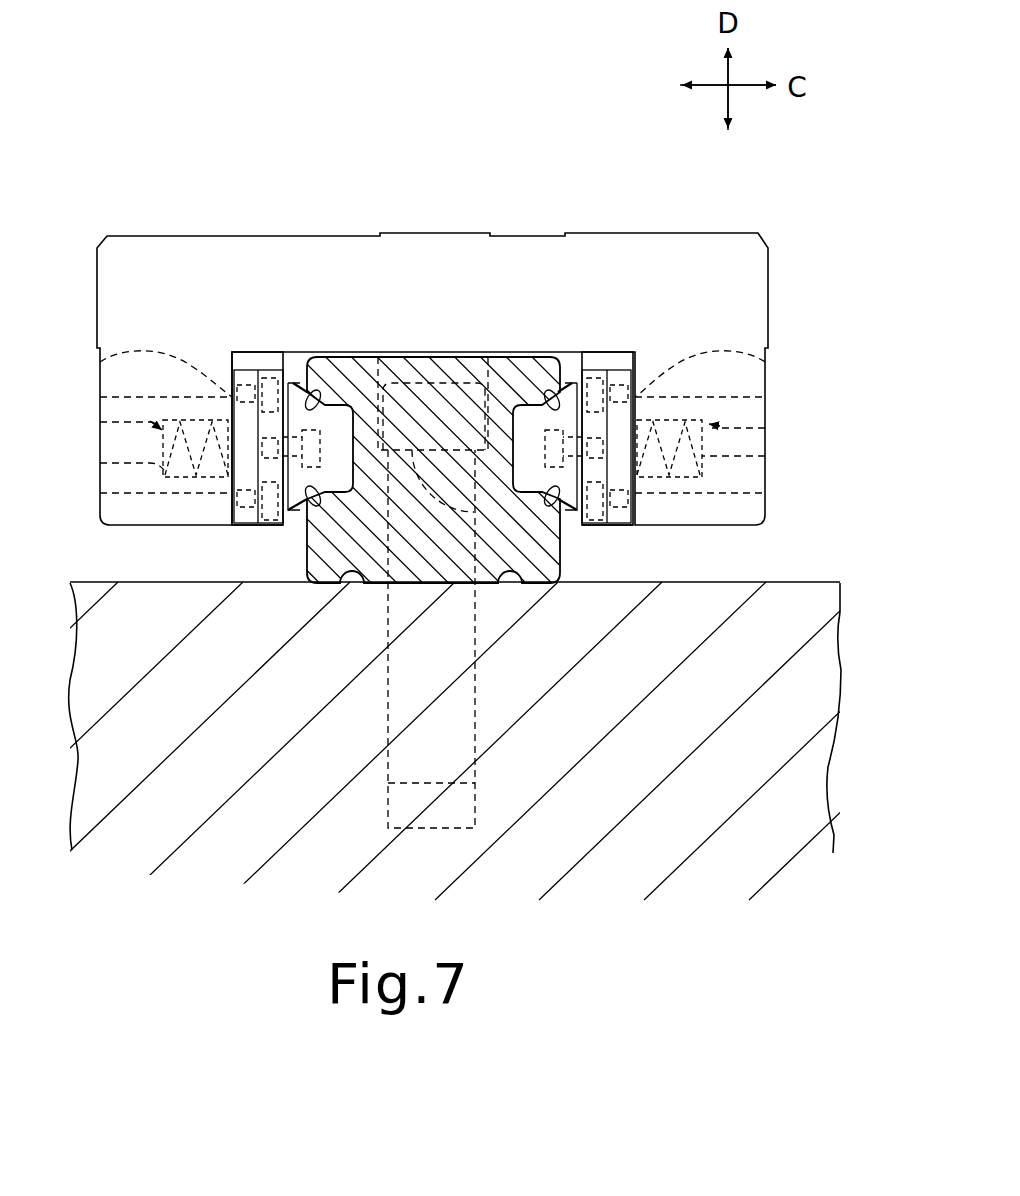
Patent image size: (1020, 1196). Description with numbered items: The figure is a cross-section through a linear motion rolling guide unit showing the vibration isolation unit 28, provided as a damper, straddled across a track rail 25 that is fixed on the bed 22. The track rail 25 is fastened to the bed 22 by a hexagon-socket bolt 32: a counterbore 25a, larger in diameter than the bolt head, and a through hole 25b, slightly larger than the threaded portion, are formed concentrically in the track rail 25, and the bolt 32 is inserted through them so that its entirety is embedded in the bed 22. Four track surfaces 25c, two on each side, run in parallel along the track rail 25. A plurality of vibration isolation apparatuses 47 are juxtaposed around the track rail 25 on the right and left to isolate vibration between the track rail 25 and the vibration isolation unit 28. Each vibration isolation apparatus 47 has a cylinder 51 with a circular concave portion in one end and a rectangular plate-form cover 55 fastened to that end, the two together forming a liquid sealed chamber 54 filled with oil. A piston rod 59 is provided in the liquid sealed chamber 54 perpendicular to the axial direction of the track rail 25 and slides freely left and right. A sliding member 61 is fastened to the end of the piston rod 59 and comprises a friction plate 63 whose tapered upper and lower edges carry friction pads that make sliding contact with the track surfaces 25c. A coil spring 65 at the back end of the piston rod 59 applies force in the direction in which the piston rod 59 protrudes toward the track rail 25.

The bed 22 is at (781, 625).
The track rail 25 is at (351, 354).
The counterbore 25a is at (472, 355).
The through hole 25b is at (408, 400).
The track surface 25c is at (326, 392).
The vibration isolation unit 28 is at (765, 234).
The bolt 32 is at (443, 400).
The vibration isolation apparatus 47 is at (241, 530).
The cylinder 51 is at (247, 358).
The liquid sealed chamber 54 is at (100, 423).
The cover 55 is at (271, 358).
The piston rod 59 is at (98, 361).
The sliding member 61 is at (296, 366).
The friction plate 63 is at (304, 380).
The coil spring 65 is at (100, 463).